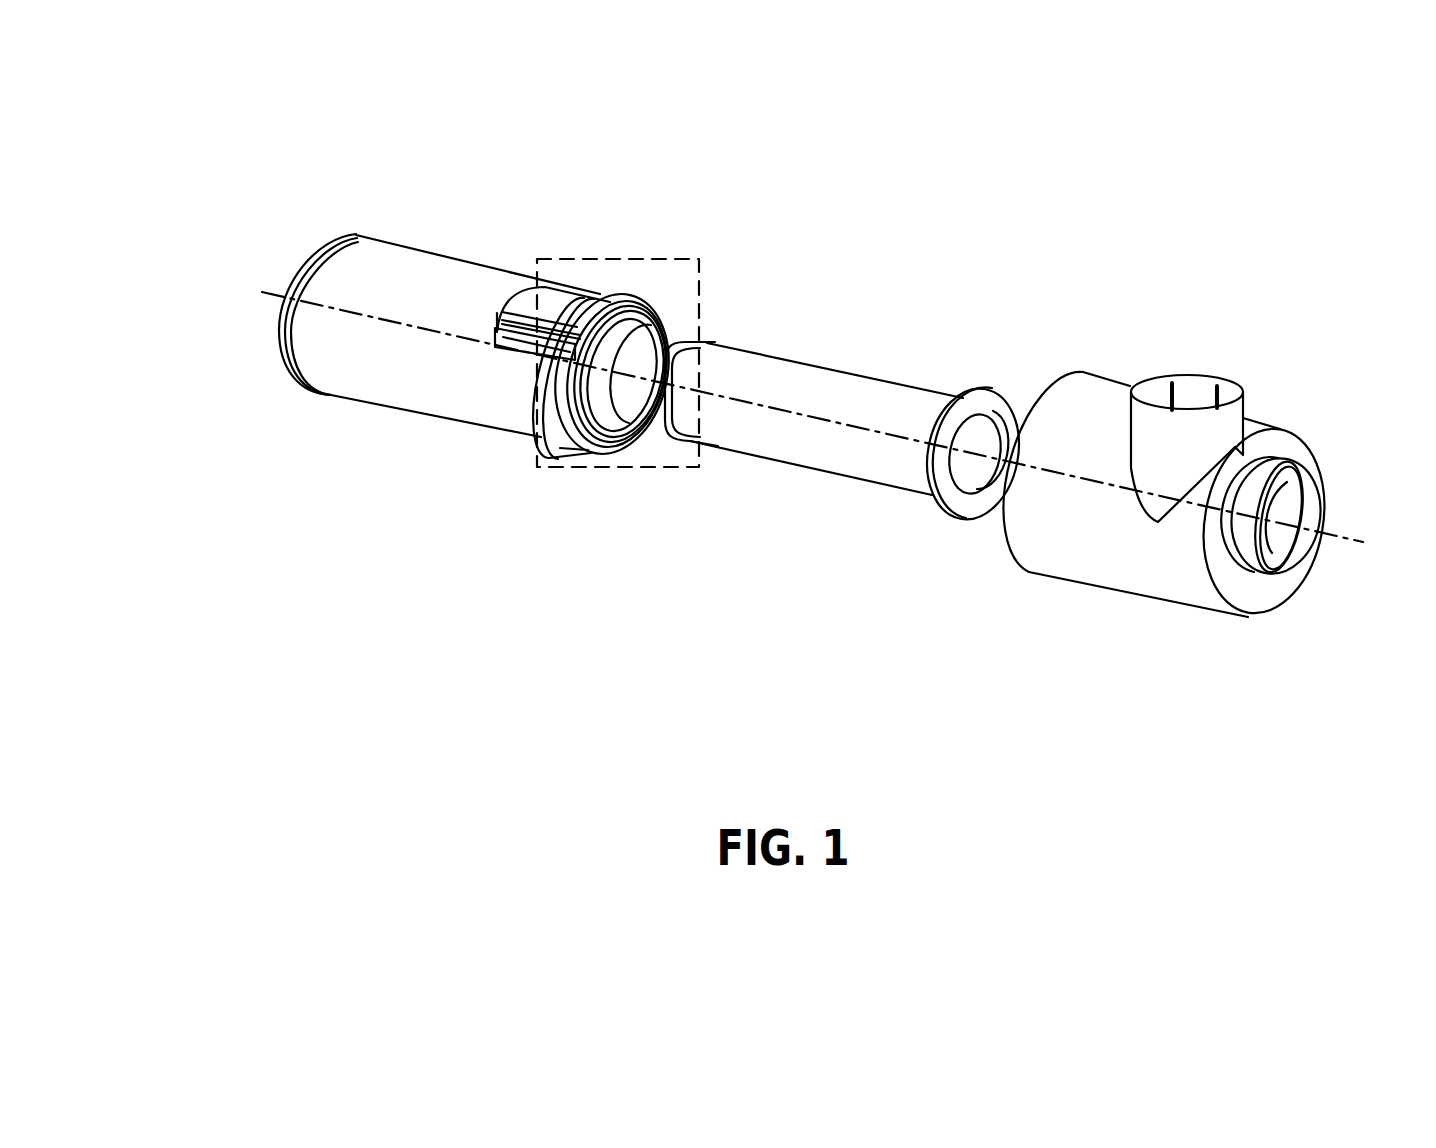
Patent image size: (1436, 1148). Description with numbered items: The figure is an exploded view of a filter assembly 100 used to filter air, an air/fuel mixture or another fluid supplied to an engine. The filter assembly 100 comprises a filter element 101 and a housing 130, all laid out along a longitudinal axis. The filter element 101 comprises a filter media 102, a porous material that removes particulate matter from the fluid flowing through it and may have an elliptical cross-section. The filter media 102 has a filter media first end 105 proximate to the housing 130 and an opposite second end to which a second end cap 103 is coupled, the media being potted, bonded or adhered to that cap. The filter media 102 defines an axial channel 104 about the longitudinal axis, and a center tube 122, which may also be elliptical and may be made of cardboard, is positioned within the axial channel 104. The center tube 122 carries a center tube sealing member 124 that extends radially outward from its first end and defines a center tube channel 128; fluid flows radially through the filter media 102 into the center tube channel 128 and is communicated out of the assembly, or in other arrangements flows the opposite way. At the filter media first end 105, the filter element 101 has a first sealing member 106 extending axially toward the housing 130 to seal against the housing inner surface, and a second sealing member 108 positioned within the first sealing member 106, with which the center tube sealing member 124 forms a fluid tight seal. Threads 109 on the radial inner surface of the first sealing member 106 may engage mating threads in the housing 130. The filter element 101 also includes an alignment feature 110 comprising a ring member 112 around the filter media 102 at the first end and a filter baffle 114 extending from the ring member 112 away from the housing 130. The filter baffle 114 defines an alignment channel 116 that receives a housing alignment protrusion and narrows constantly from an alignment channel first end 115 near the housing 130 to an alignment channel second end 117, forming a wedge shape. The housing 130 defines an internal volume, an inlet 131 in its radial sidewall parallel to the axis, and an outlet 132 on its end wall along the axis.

The filter assembly 100 is at (1052, 221).
The filter element 101 is at (396, 336).
The filter media 102 is at (431, 270).
The second end cap 103 is at (280, 356).
The axial channel 104 is at (613, 370).
The filter media first end 105 is at (547, 455).
The first sealing member 106 is at (612, 357).
The second sealing member 108 is at (608, 430).
The threads 109 is at (680, 347).
The alignment feature 110 is at (558, 437).
The ring member 112 is at (552, 398).
The filter baffle 114 is at (555, 305).
The alignment channel first end 115 is at (637, 427).
The alignment channel 116 is at (548, 325).
The alignment channel second end 117 is at (500, 322).
The center tube 122 is at (810, 382).
The center tube sealing member 124 is at (965, 423).
The center tube channel 128 is at (963, 487).
The housing 130 is at (1194, 480).
The inlet 131 is at (1205, 390).
The outlet 132 is at (1280, 567).